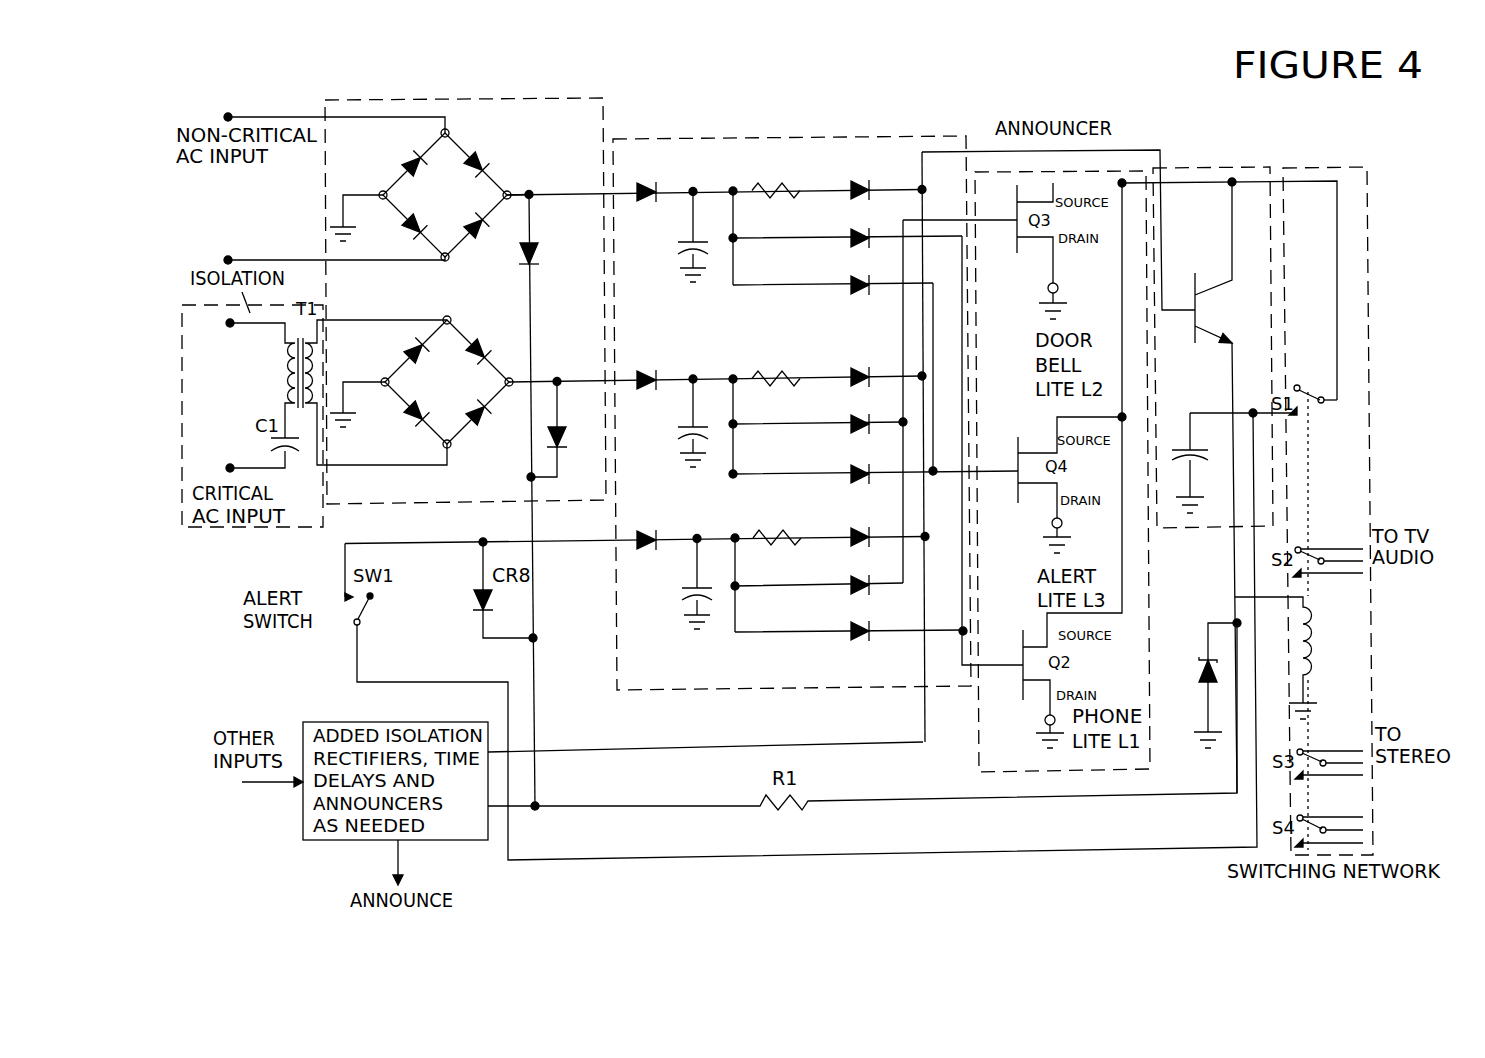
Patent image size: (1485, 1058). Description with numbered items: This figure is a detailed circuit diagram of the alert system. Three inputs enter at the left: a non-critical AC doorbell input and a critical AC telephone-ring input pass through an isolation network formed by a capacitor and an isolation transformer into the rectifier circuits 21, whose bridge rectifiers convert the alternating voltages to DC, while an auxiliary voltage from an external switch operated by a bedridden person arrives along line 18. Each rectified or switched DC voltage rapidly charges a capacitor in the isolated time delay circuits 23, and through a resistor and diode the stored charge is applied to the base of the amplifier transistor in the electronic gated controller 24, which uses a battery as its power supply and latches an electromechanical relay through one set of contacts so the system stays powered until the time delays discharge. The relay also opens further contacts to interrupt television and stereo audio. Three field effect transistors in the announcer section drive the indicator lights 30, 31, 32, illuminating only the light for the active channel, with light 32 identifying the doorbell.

The input line 18 is at (432, 543).
The rectifier circuits 21 is at (465, 286).
The time delay circuits 23 is at (815, 398).
The electronic gated controller 24 is at (1245, 458).
The light 30 is at (1045, 530).
The light 31 is at (1040, 722).
The light 32 is at (1047, 293).